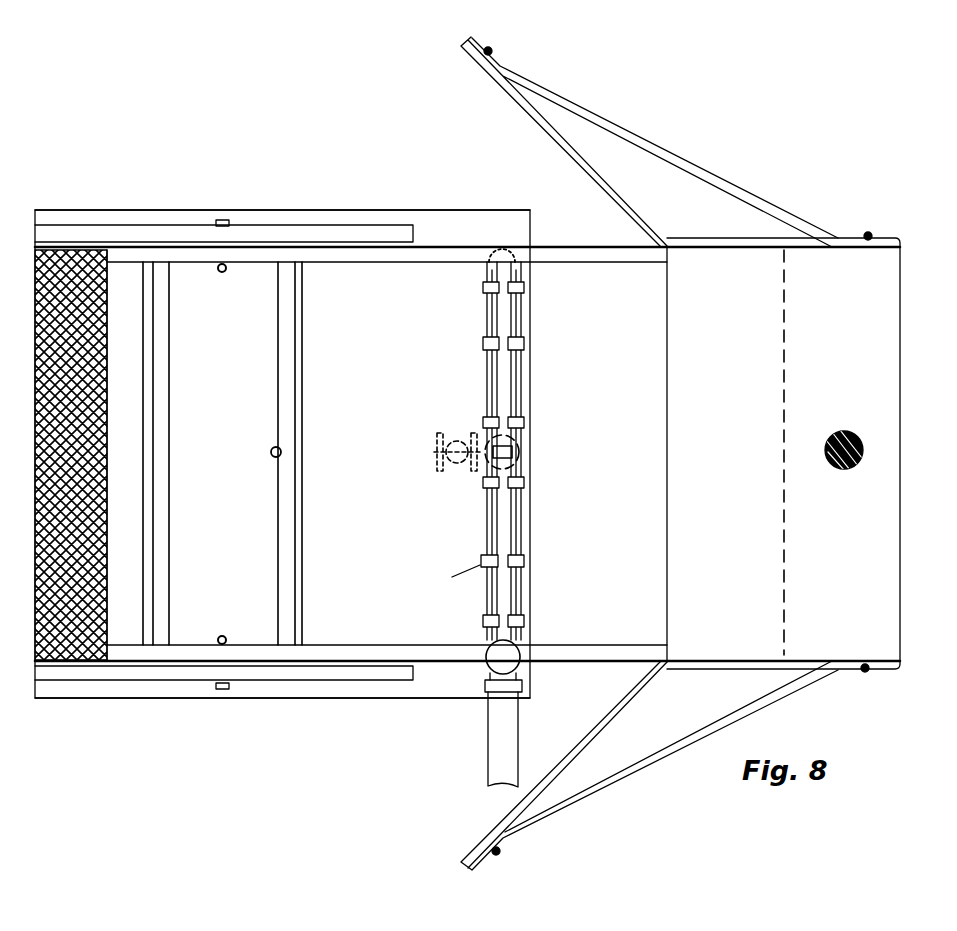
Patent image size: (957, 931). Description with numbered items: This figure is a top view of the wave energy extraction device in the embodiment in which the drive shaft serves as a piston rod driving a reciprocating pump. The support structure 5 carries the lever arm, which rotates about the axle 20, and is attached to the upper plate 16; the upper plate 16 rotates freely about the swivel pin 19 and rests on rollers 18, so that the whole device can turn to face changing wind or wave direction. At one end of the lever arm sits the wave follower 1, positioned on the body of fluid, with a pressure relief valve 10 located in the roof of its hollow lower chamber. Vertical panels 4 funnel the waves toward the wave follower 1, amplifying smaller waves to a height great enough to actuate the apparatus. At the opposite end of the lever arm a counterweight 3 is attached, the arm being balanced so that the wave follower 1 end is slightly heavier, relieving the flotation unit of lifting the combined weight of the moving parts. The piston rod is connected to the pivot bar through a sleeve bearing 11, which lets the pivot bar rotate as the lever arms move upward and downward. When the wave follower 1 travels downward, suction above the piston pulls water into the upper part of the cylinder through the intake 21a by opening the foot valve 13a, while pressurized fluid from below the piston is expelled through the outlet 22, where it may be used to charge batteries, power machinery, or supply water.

The wave follower 1 is at (867, 603).
The counterweight 3 is at (87, 337).
The vertical panels 4 is at (543, 126).
The support structure 5 is at (335, 235).
The pressure relief valve 10 is at (847, 475).
The sleeve bearing 11 is at (508, 452).
The foot valve 13a is at (490, 265).
The upper plate 16 is at (87, 220).
The rollers 18 is at (455, 462).
The swivel pin 19 is at (270, 453).
The axle 20 is at (230, 218).
The intake 21a is at (487, 378).
The outlet 22 is at (500, 745).